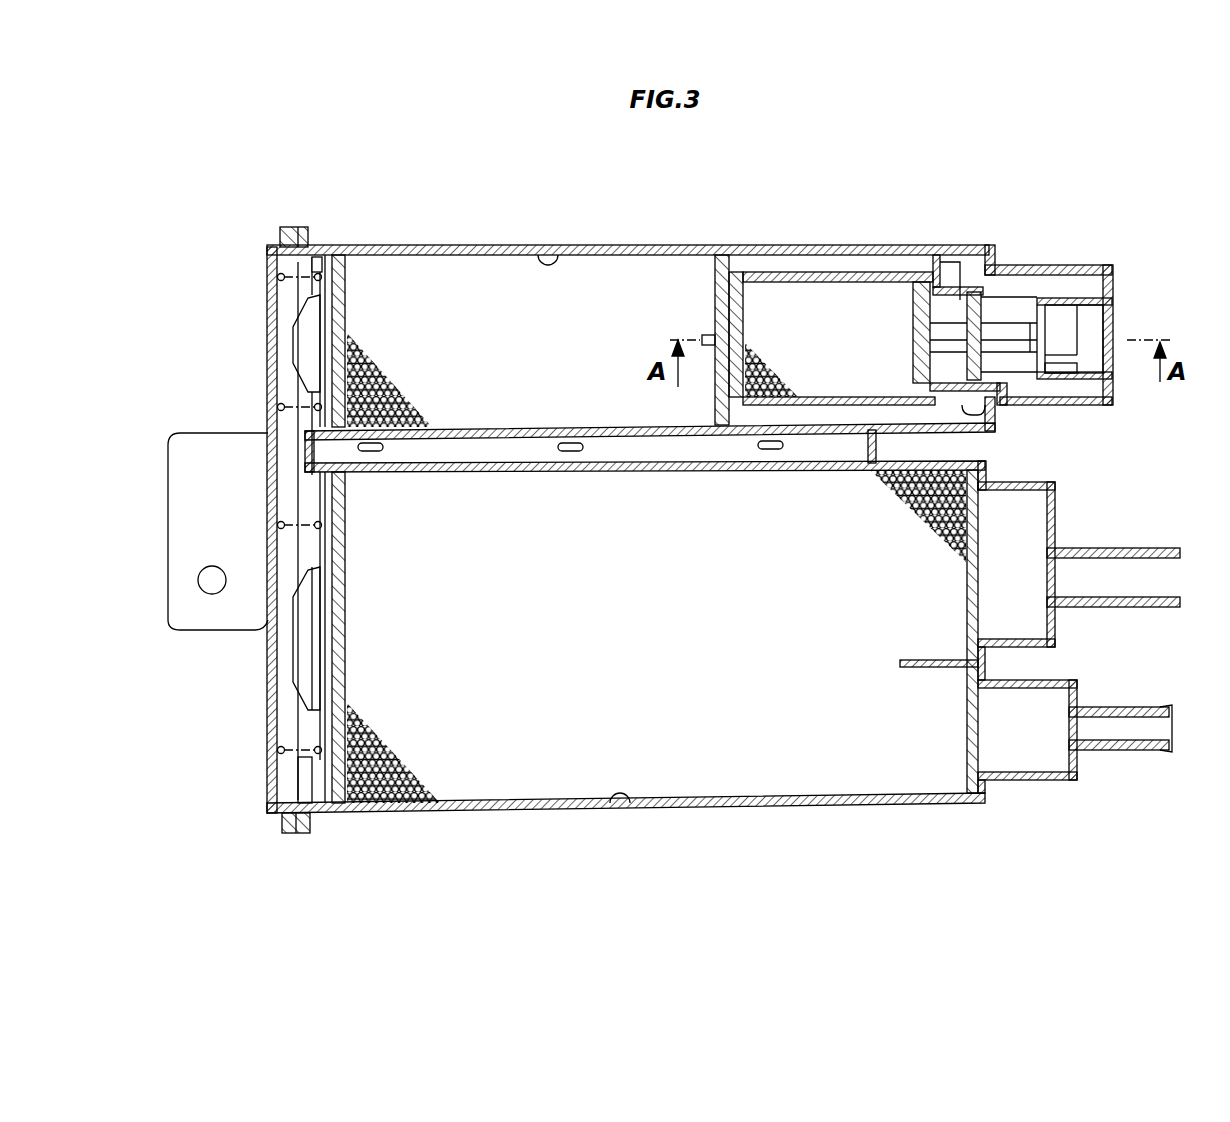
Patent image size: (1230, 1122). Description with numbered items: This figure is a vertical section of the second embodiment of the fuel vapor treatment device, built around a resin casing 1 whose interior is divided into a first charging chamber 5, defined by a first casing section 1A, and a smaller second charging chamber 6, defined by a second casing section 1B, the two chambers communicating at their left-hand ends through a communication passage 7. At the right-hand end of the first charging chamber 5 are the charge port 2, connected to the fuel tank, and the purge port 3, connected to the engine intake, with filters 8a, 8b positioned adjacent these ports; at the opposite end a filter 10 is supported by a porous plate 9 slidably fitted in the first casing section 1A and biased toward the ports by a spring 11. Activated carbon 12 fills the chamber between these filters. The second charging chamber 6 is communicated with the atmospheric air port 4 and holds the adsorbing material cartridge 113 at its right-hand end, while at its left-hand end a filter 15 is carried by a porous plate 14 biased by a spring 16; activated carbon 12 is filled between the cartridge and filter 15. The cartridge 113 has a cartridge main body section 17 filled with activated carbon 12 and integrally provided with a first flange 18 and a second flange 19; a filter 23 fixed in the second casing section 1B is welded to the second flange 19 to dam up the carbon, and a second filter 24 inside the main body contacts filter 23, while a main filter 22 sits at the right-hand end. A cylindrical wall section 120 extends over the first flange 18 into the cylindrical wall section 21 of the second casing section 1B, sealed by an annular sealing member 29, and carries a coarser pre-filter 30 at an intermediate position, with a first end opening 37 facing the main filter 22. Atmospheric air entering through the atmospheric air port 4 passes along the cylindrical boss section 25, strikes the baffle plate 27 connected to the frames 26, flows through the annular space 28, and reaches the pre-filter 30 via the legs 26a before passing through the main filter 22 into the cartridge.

The casing 1 is at (752, 815).
The first casing section 1A is at (868, 803).
The second casing section 1B is at (620, 247).
The charge port 2 is at (1125, 600).
The purge port 3 is at (1120, 748).
The atmospheric air port 4 is at (1112, 305).
The first charging chamber 5 is at (620, 800).
The second charging chamber 6 is at (546, 260).
The communication passage 7 is at (285, 432).
The filter 8a is at (972, 500).
The filter 8b is at (975, 740).
The porous plate 9 is at (322, 772).
The filter 10 is at (341, 808).
The spring 11 is at (280, 750).
The activated carbon 12 is at (385, 385).
The porous plate 14 is at (327, 265).
The filter 15 is at (350, 297).
The spring 16 is at (278, 278).
The cartridge main body section 17 is at (808, 405).
The first flange 18 is at (975, 407).
The second flange 19 is at (745, 410).
The cylindrical wall section 21 is at (1075, 268).
The main filter 22 is at (918, 355).
The filter 23 is at (712, 273).
The second filter 24 is at (760, 308).
The cylindrical boss section 25 is at (1110, 280).
The frames 26 is at (1060, 310).
The legs 26a is at (1020, 363).
The baffle plate 27 is at (1045, 373).
The annular space 28 is at (1047, 385).
The annular sealing member 29 is at (998, 293).
The pre-filter 30 is at (972, 293).
The first end opening 37 is at (945, 300).
The adsorbing material cartridge 113 is at (833, 262).
The cylindrical wall section 120 is at (1030, 283).